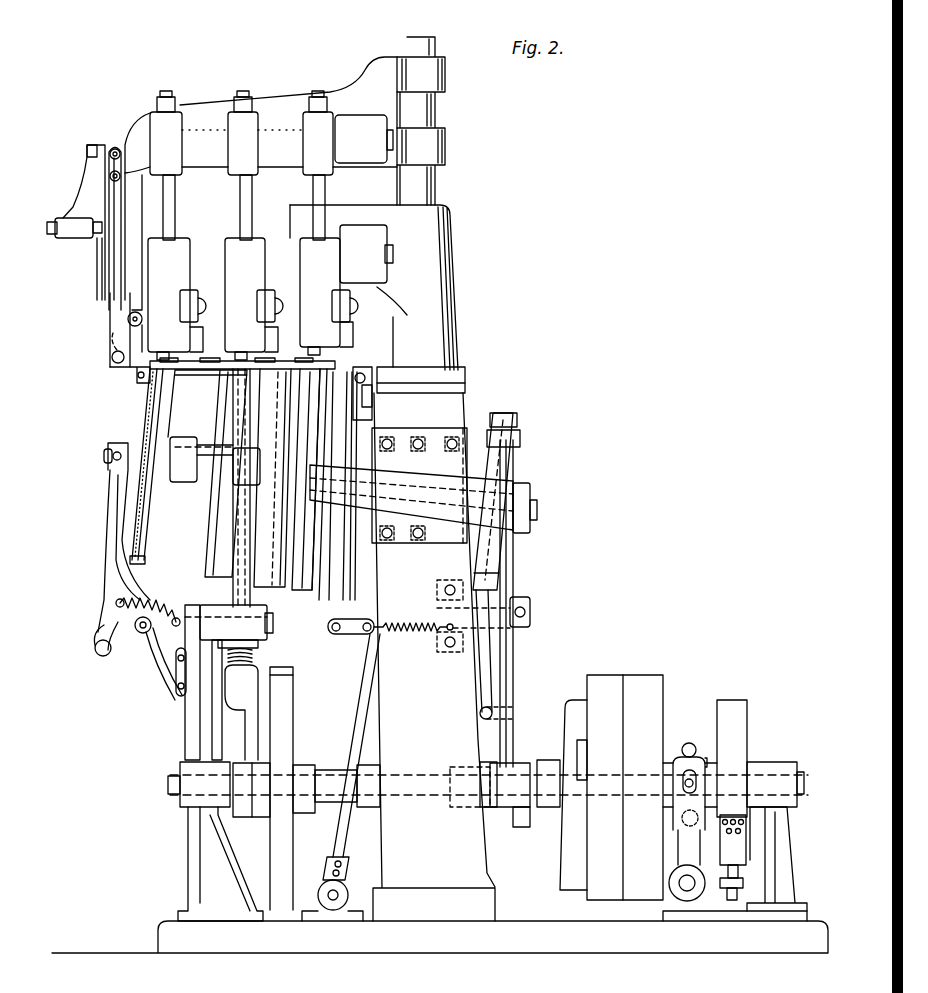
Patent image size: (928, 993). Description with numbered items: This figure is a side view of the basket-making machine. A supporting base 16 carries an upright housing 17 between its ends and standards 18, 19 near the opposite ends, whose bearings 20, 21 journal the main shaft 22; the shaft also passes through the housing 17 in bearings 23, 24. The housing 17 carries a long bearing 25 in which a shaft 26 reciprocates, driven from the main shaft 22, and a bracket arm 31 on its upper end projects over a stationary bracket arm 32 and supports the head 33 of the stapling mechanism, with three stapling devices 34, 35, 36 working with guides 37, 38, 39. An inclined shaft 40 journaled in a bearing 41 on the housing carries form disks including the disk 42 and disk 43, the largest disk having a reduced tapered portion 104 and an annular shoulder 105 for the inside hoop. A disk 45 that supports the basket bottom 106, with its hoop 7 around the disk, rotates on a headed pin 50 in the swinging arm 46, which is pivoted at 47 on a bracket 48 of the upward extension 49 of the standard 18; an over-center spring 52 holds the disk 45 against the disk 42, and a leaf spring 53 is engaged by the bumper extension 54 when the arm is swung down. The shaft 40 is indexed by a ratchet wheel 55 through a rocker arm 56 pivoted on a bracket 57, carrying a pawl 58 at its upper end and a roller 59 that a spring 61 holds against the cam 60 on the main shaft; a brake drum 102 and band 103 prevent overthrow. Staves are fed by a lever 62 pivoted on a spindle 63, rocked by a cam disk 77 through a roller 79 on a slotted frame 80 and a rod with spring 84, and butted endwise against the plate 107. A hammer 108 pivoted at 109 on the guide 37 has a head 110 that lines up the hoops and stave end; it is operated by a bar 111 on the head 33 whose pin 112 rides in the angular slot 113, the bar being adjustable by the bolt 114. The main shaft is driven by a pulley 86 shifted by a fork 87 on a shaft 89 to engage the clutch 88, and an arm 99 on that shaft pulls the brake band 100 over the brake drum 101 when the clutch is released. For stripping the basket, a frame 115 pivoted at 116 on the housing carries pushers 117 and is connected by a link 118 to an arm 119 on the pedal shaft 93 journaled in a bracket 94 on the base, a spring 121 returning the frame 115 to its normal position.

The hoop 7 is at (141, 565).
The supporting base 16 is at (387, 955).
The upright housing 17 is at (478, 848).
The standard 18 is at (190, 857).
The standard 19 is at (785, 833).
The bearing 20 is at (210, 796).
The bearing 21 is at (775, 766).
The main shaft 22 is at (332, 772).
The bearing 23 is at (368, 766).
The bearing 24 is at (490, 765).
The long bearing 25 is at (440, 326).
The shaft 26 is at (441, 113).
The bracket arm 31 is at (263, 103).
The stationary bracket arm 32 is at (368, 215).
The frame or head 33 is at (278, 128).
The stapling device 34 is at (170, 203).
The stapling device 35 is at (249, 202).
The stapling device 36 is at (319, 196).
The guide 37 is at (181, 272).
The guide 38 is at (258, 270).
The guide 39 is at (329, 271).
The shaft 40 is at (538, 512).
The bearing 41 is at (418, 481).
The disk 42 is at (216, 554).
The disk 43 is at (216, 531).
The disk 45 is at (150, 433).
The bracket or arm 46 is at (107, 551).
The pivot 47 is at (142, 633).
The bracket 48 is at (168, 646).
The upwardly projecting extension 49 is at (185, 743).
The headed pin or shaft 50 is at (104, 457).
The spring 52 is at (213, 626).
The leaf spring 53 is at (180, 706).
The bumper extension 54 is at (98, 641).
The ratchet wheel 55 is at (488, 555).
The rocker arm 56 is at (513, 656).
The bracket 57 is at (483, 641).
The pawl 58 is at (511, 419).
The roller 59 is at (522, 828).
The cam 60 is at (518, 765).
The spring 61 is at (479, 708).
The lever 62 is at (238, 600).
The spindle 63 is at (273, 649).
The cam disk 77 is at (293, 849).
The roller 79 is at (298, 733).
The slotted frame 80 is at (256, 736).
The spring 84 is at (254, 661).
The pulley 86 is at (641, 681).
The shifting fork 87 is at (685, 839).
The clutch 88 is at (572, 706).
The shaft 89 is at (665, 891).
The shaft 93 is at (332, 906).
The bracket 94 is at (352, 908).
The arm 99 is at (715, 896).
The brake band 100 is at (748, 719).
The brake drum 101 is at (745, 859).
The brake drum 102 is at (345, 561).
The band 103 is at (370, 443).
The reduced and tapered portion 104 is at (290, 441).
The annular shoulder 105 is at (322, 590).
The basket bottom 106 is at (152, 421).
The plate 107 is at (352, 360).
The hammer or tapping member 108 is at (136, 376).
The pivot 109 is at (128, 318).
The head 110 is at (152, 386).
The bar 111 is at (108, 281).
The pin 112 is at (111, 356).
The slot 113 is at (112, 341).
The screw or bolt 114 is at (101, 246).
The frame 115 is at (348, 566).
The pivot 116 is at (358, 371).
The pusher 117 is at (401, 494).
The link 118 is at (370, 627).
The arm 119 is at (360, 693).
The spring 121 is at (405, 635).